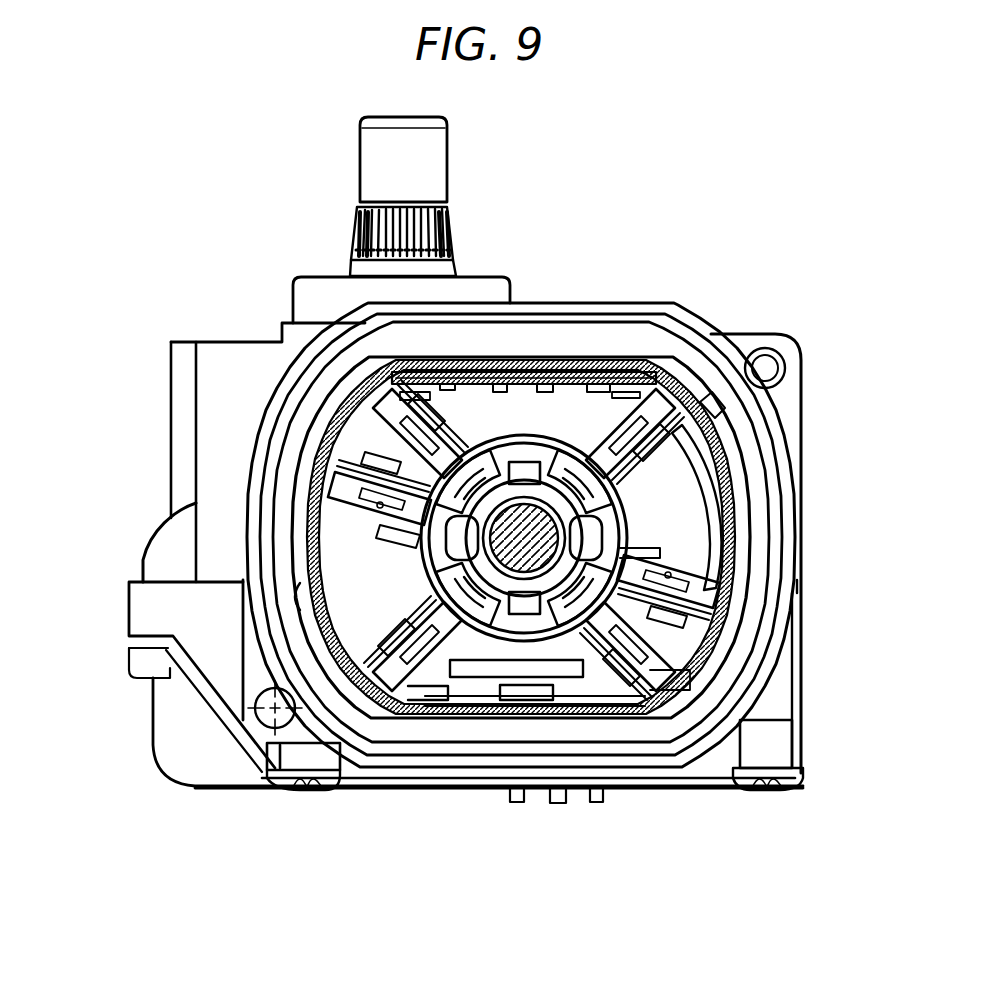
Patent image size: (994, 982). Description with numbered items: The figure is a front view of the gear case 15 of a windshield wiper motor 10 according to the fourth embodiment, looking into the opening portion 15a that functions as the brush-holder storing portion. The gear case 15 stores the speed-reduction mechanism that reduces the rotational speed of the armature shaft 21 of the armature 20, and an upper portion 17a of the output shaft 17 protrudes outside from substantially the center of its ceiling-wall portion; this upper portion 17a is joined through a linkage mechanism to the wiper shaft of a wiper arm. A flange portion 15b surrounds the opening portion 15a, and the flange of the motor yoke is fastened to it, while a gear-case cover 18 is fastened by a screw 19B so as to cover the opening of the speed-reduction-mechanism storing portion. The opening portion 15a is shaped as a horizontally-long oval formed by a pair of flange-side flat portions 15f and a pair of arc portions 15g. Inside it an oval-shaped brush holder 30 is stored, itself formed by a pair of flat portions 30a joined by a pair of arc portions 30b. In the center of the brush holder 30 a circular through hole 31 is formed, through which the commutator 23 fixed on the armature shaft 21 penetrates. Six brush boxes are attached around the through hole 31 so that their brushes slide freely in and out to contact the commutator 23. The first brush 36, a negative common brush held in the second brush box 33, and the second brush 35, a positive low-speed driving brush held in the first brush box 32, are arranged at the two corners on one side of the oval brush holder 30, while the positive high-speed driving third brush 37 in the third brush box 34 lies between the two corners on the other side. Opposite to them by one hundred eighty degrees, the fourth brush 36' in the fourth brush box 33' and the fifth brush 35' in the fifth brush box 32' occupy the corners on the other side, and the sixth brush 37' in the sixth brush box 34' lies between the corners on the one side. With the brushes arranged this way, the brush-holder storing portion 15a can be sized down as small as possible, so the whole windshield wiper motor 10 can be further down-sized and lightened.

The windshield wiper motor 10 is at (553, 835).
The gear case 15 is at (134, 540).
The opening portion 15a is at (728, 470).
The flange portion 15b is at (782, 420).
The flange-side flat portion 15f is at (497, 357).
The arc portion 15g is at (785, 525).
The output shaft 17 is at (348, 203).
The upper portion of output shaft 17a is at (383, 143).
The gear-case cover 18 is at (708, 790).
The screw 19B is at (304, 790).
The armature 20 is at (735, 500).
The armature shaft 21 is at (522, 524).
The commutator 23 is at (550, 440).
The brush holder 30 is at (622, 390).
The flat portion 30a is at (590, 345).
The arc portion 30b is at (712, 332).
The through hole 31 is at (530, 640).
The first brush box 32 is at (477, 312).
The fifth brush box 32' is at (657, 683).
The second brush box 33 is at (255, 643).
The fourth brush box 33' is at (652, 333).
The third brush box 34 is at (744, 584).
The sixth brush box 34' is at (265, 475).
The low-speed driving brush 35 is at (292, 421).
The fifth brush 35' is at (734, 651).
The common brush 36 is at (480, 776).
The fourth brush 36' is at (779, 398).
The high-speed driving brush 37 is at (737, 585).
The sixth brush 37' is at (263, 500).